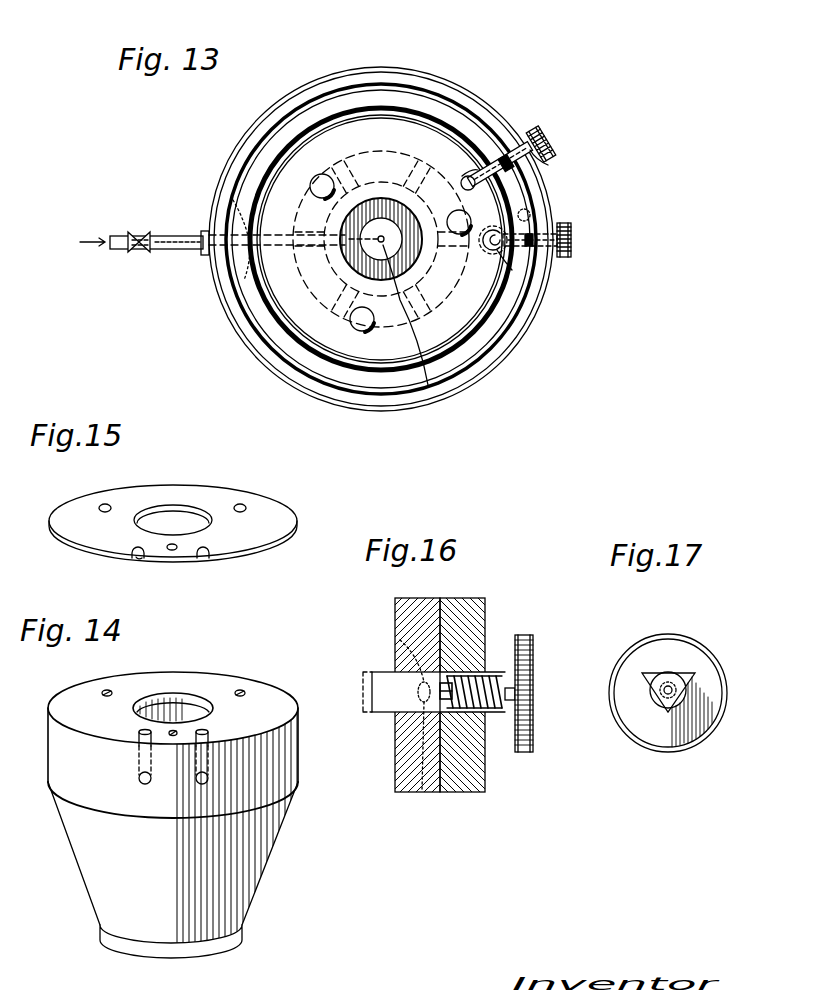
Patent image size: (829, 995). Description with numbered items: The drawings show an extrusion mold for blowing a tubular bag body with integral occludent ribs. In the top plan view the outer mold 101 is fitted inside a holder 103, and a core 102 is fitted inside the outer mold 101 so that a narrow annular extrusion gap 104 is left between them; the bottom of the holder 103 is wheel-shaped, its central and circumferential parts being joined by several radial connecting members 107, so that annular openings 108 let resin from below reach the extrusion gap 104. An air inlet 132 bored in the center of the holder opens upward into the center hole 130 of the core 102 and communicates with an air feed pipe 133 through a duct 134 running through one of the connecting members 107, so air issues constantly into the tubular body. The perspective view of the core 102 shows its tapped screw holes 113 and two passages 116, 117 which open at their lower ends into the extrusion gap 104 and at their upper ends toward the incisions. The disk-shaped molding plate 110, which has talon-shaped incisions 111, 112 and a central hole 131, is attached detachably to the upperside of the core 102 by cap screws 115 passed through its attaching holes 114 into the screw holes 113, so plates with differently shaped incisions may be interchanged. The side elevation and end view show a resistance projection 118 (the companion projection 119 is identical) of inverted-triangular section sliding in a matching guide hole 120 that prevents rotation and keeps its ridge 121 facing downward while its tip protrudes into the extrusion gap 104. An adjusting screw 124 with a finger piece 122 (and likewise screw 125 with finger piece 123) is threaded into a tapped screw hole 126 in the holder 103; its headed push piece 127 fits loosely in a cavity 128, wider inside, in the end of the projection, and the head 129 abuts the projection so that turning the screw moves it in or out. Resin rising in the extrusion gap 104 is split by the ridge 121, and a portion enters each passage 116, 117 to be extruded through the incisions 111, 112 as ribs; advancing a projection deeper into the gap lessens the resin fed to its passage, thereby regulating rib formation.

In FIG. 13, the outer mold 101 is at (322, 107).
In FIG. 13, the core 102 is at (422, 128).
In FIG. 14, the core 102 is at (265, 835).
In FIG. 16, the core 102 is at (410, 610).
In FIG. 13, the holder 103 is at (272, 110).
In FIG. 16, the holder 103 is at (466, 606).
In FIG. 13, the extrusion gap 104 is at (372, 104).
In FIG. 13, the connecting members 107 is at (440, 297).
In FIG. 13, the annular openings 108 is at (302, 278).
In FIG. 15, the molding plate 110 is at (178, 492).
In FIG. 13, the talon-shaped incision 111 is at (512, 270).
In FIG. 15, the talon-shaped incision 111 is at (138, 559).
In FIG. 13, the talon-shaped incision 112 is at (493, 150).
In FIG. 15, the talon-shaped incision 112 is at (205, 559).
In FIG. 14, the screw holes 113 is at (107, 689).
In FIG. 15, the attaching holes 114 is at (100, 505).
In FIG. 13, the cap screws 115 is at (353, 323).
In FIG. 13, the passage 116 is at (530, 213).
In FIG. 14, the passage 116 is at (140, 760).
In FIG. 13, the passage 117 is at (468, 176).
In FIG. 14, the passage 117 is at (207, 757).
In FIG. 13, the resistance projection 118 is at (500, 252).
In FIG. 16, the resistance projection 118 is at (375, 683).
In FIG. 17, the resistance projection 118 is at (652, 676).
In FIG. 13, the resistance projection 119 is at (535, 128).
In FIG. 16, the guide holes 120 is at (405, 672).
In FIG. 17, the downward facing ridge 121 is at (667, 714).
In FIG. 13, the finger piece 122 is at (572, 240).
In FIG. 16, the finger piece 122 is at (535, 645).
In FIG. 17, the finger piece 122 is at (680, 624).
In FIG. 13, the finger piece 123 is at (555, 123).
In FIG. 13, the adjusting screw 124 is at (562, 226).
In FIG. 16, the adjusting screw 124 is at (505, 695).
In FIG. 17, the adjusting screw 124 is at (660, 698).
In FIG. 13, the adjusting screw 125 is at (538, 158).
In FIG. 16, the screw holes 126 is at (488, 770).
In FIG. 16, the headed push piece 127 is at (446, 683).
In FIG. 16, the cavity 128 is at (422, 790).
In FIG. 16, the head 129 is at (400, 640).
In FIG. 14, the center hole 130 is at (178, 695).
In FIG. 15, the hole 131 is at (152, 502).
In FIG. 13, the air inlet 132 is at (467, 380).
In FIG. 13, the air feed pipe 133 is at (187, 222).
In FIG. 13, the duct 134 is at (233, 200).